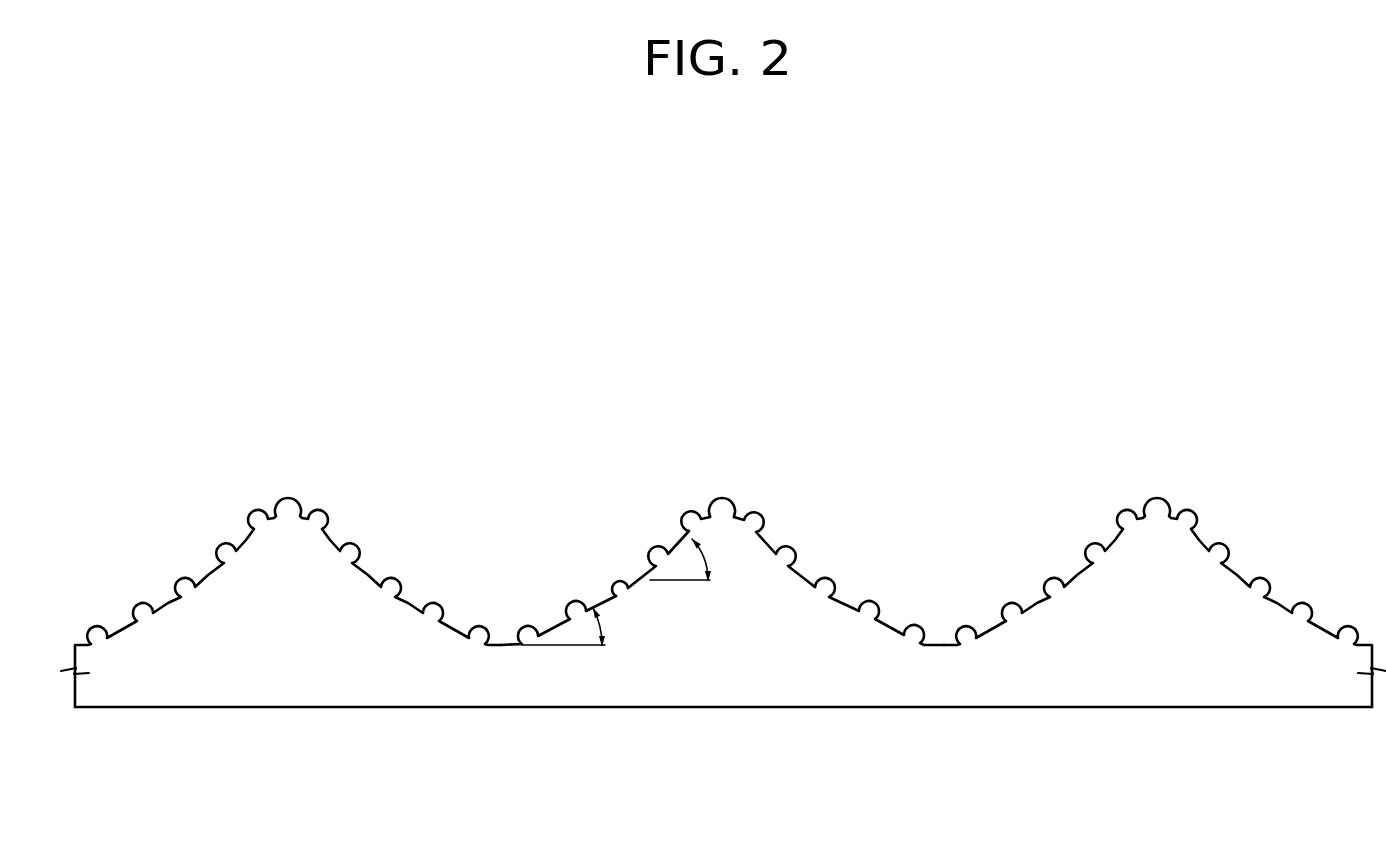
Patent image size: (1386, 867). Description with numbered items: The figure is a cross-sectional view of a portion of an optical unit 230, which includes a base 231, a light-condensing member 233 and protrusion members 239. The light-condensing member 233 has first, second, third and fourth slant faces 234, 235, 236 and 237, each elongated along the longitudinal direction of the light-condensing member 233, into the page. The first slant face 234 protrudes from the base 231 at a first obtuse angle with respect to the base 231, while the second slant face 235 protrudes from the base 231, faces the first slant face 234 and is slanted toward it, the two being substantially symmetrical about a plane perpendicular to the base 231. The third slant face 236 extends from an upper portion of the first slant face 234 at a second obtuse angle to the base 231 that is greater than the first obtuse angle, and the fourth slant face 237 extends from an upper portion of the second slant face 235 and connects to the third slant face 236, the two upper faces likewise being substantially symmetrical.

The optical unit 230 is at (742, 274).
The base 231 is at (717, 686).
The light-condensing member 233 is at (945, 428).
The first slant face 234 is at (600, 592).
The second slant face 235 is at (941, 645).
The third slant face 236 is at (703, 501).
The fourth slant face 237 is at (817, 576).
The protrusion members 239 is at (621, 586).